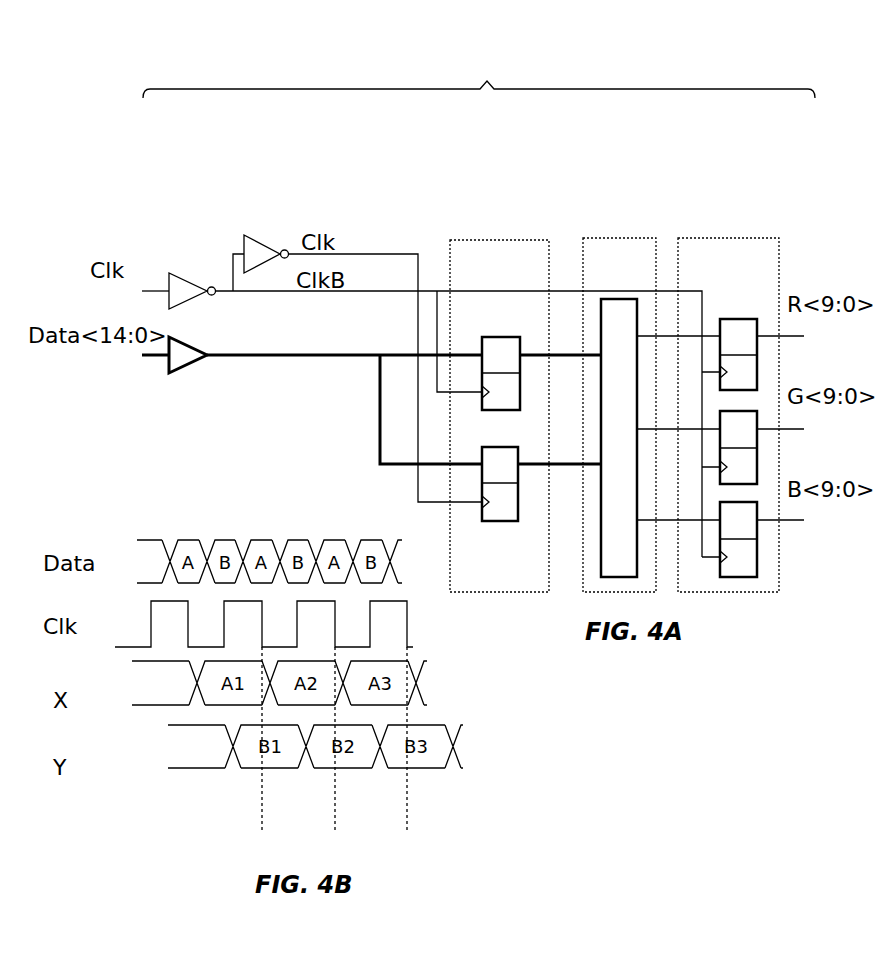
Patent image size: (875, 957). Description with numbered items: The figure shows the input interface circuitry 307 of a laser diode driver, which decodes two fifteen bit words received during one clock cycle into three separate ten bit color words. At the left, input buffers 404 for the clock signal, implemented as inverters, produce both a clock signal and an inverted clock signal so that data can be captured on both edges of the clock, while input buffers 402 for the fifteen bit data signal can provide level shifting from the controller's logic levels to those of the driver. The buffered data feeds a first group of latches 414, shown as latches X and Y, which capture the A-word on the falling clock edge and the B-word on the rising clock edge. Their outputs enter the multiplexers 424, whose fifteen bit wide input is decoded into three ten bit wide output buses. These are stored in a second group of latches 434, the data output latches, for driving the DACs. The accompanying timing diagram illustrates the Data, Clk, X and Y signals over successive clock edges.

The input interface circuitry 307 is at (479, 74).
The input buffers for the data signal 402 is at (197, 371).
The input buffers for the clock signal 404 is at (197, 265).
The first group of latches 414 is at (480, 240).
The multiplexers 424 is at (628, 238).
The second group of latches 434 is at (737, 238).